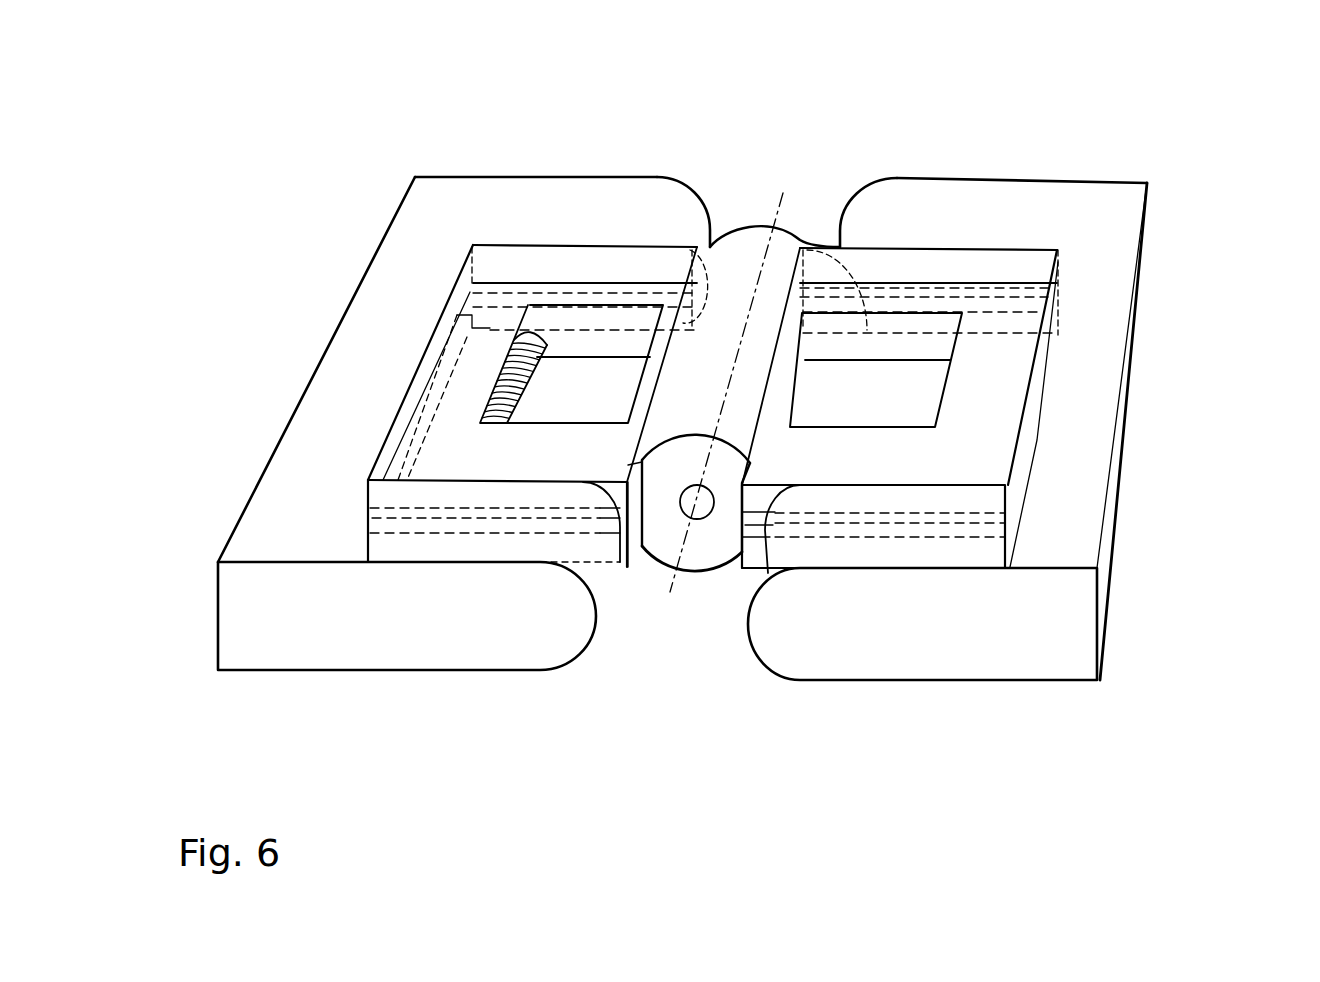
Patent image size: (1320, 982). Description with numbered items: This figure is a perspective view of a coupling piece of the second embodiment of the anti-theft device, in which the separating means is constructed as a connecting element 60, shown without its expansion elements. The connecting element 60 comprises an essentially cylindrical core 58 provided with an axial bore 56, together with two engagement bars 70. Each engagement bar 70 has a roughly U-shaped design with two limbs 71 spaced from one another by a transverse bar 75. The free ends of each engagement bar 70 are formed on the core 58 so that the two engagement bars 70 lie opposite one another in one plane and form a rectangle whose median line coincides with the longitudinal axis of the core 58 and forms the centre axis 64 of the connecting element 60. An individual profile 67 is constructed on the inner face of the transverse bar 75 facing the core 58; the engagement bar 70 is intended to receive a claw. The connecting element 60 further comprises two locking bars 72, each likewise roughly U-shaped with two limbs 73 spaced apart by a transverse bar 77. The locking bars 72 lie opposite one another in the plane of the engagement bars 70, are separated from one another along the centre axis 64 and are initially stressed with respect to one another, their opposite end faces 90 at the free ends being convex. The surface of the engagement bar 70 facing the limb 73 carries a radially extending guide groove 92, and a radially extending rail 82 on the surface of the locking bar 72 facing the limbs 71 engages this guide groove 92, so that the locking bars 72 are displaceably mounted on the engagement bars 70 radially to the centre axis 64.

The axial bore 56 is at (703, 510).
The core 58 is at (680, 420).
The connecting element 60 is at (672, 165).
The centre axis 64 is at (670, 725).
The individual profile 67 is at (547, 343).
The engagement bar 70 is at (932, 402).
The limb 71 is at (498, 263).
The locking bar 72 is at (287, 692).
The limb 73 is at (532, 218).
The transverse bar 75 is at (443, 357).
The transverse bar 77 is at (383, 398).
The rail 82 is at (433, 533).
The end face 90 is at (862, 212).
The guide groove 92 is at (993, 532).